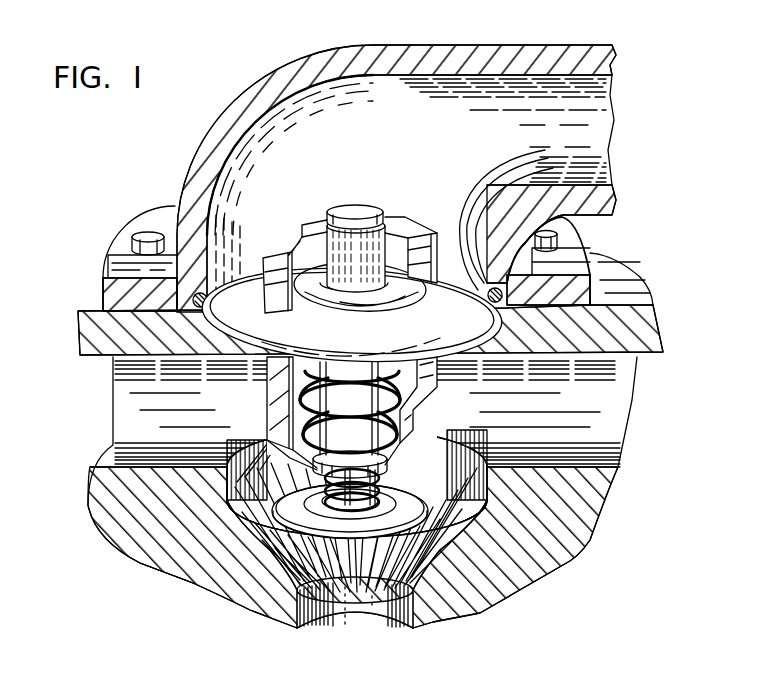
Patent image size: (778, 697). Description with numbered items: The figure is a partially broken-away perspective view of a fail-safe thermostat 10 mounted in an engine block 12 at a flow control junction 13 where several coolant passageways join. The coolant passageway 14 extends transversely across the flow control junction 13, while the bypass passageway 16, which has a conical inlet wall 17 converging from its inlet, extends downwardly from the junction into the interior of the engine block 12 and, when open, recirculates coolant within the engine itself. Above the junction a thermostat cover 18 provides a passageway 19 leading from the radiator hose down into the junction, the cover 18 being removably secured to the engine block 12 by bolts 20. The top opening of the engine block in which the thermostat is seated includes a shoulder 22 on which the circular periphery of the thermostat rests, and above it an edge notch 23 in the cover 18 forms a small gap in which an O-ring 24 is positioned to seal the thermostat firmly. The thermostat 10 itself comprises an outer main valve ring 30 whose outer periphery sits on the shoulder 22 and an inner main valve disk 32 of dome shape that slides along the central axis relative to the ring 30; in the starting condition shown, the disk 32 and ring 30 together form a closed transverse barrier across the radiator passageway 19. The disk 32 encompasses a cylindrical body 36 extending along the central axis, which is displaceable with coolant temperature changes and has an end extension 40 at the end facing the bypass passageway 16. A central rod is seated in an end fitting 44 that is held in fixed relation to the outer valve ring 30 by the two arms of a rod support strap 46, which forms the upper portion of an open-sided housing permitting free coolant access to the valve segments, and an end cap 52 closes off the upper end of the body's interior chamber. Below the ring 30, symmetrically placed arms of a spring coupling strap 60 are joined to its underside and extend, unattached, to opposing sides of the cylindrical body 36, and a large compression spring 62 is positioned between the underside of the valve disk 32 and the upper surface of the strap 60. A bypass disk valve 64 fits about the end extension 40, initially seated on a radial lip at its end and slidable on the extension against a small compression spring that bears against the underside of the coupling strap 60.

The thermostat 10 is at (462, 392).
The engine block 12 is at (540, 557).
The flow control junction 13 is at (172, 449).
The coolant passageway 14 is at (122, 410).
The bypass passageway 16 is at (379, 600).
The conical inlet wall 17 is at (330, 617).
The thermostat cover 18 is at (487, 48).
The passageway 19 is at (580, 137).
The bolts 20 is at (136, 240).
The shoulder 22 is at (563, 362).
The edge notch 23 is at (533, 262).
The O-ring 24 is at (196, 299).
The outer main valve ring 30 is at (220, 323).
The inner main valve disk 32 is at (310, 292).
The cylindrical body 36 is at (350, 400).
The end extension 40 is at (387, 507).
The end fitting 44 is at (350, 205).
The rod support strap 46 is at (262, 260).
The end cap 52 is at (384, 277).
The spring coupling strap 60 is at (273, 390).
The large compression spring 62 is at (422, 414).
The bypass disk valve 64 is at (358, 548).